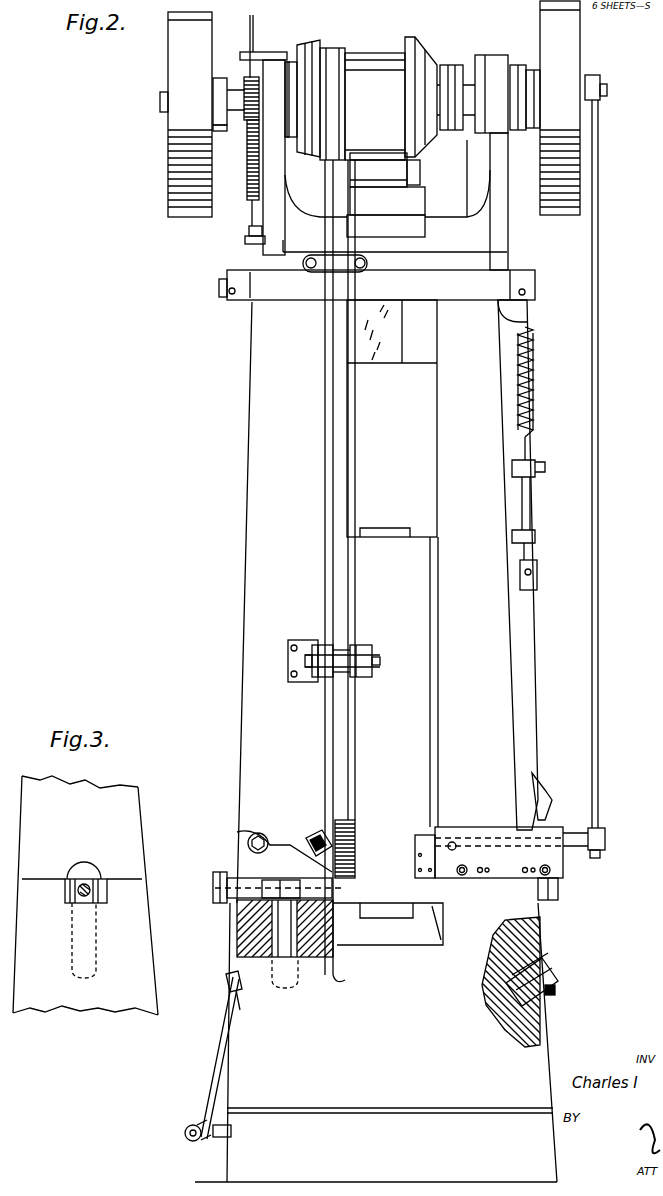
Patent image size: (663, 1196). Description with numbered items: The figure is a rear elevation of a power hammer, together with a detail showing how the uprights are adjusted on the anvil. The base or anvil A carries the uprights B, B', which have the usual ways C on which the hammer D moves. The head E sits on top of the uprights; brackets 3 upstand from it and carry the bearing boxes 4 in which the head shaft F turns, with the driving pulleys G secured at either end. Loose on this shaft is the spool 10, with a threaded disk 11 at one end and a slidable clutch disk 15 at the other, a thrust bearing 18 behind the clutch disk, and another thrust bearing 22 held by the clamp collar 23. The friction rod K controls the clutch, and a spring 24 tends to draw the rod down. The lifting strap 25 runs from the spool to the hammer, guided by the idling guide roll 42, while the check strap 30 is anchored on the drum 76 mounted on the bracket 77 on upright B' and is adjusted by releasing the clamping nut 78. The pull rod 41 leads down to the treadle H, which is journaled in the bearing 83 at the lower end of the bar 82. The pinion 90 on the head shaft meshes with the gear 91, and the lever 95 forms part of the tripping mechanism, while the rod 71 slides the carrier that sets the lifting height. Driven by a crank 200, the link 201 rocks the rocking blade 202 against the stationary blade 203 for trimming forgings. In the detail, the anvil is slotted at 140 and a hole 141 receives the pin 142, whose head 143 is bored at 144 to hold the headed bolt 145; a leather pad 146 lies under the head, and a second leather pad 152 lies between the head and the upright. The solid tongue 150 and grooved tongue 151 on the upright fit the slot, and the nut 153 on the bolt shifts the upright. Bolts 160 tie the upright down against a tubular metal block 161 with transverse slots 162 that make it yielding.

In FIG. 2, the driving pulley G is at (170, 77).
In FIG. 2, the head shaft F is at (164, 102).
In FIG. 2, the lever 95 is at (250, 26).
In FIG. 2, the pinion 90 is at (248, 82).
In FIG. 2, the gear 91 is at (250, 166).
In FIG. 2, the pull rod 41 is at (250, 223).
In FIG. 2, the bracket 3 is at (284, 197).
In FIG. 2, the bearing box 4 is at (284, 54).
In FIG. 2, the disk 11 is at (295, 60).
In FIG. 2, the spool 10 is at (310, 48).
In FIG. 2, the check strap 30 is at (340, 50).
In FIG. 2, the strap 25 is at (382, 45).
In FIG. 2, the clutch disk 15 is at (426, 56).
In FIG. 2, the thrust bearing 18 is at (453, 68).
In FIG. 2, the thrust bearing 22 is at (520, 66).
In FIG. 2, the clamp collar 23 is at (538, 88).
In FIG. 2, the crank 200 is at (606, 92).
In FIG. 2, the link 201 is at (600, 125).
In FIG. 2, the idling guide roll 42 is at (380, 154).
In FIG. 2, the head E is at (508, 250).
In FIG. 2, the friction rod K is at (468, 176).
In FIG. 2, the hammer D is at (430, 392).
In FIG. 2, the way C is at (430, 712).
In FIG. 2, the upright B' is at (270, 602).
In FIG. 3, the upright B' is at (90, 895).
In FIG. 2, the clamping nut 78 is at (305, 660).
In FIG. 2, the drum 76 is at (360, 641).
In FIG. 2, the bracket 77 is at (309, 683).
In FIG. 2, the upright B is at (530, 565).
In FIG. 2, the spring 24 is at (535, 343).
In FIG. 2, the rod 71 is at (532, 692).
In FIG. 2, the stationary blade 203 is at (416, 868).
In FIG. 2, the rocking blade 202 is at (578, 850).
In FIG. 2, the headed bolt 145 is at (219, 872).
In FIG. 3, the headed bolt 145 is at (96, 904).
In FIG. 2, the bore 144 is at (335, 888).
In FIG. 2, the leather pad 152 is at (276, 878).
In FIG. 3, the leather pad 152 is at (88, 876).
In FIG. 2, the tongue 151 is at (253, 856).
In FIG. 3, the tongue 151 is at (68, 895).
In FIG. 2, the head 143 is at (314, 857).
In FIG. 2, the tongue 150 is at (345, 905).
In FIG. 2, the hole 141 is at (355, 925).
In FIG. 2, the slot 140 is at (250, 924).
In FIG. 3, the slot 140 is at (110, 892).
In FIG. 2, the nut 153 is at (237, 902).
In FIG. 2, the leather pad 146 is at (236, 950).
In FIG. 2, the pin 142 is at (286, 980).
In FIG. 3, the pin 142 is at (98, 950).
In FIG. 2, the base or anvil A is at (545, 1060).
In FIG. 2, the bolt 160 is at (532, 936).
In FIG. 2, the tubular metal block 161 is at (560, 985).
In FIG. 2, the transverse slot 162 is at (556, 972).
In FIG. 2, the bar 82 is at (250, 1040).
In FIG. 2, the bearing 83 is at (188, 1128).
In FIG. 2, the treadle H is at (232, 1131).